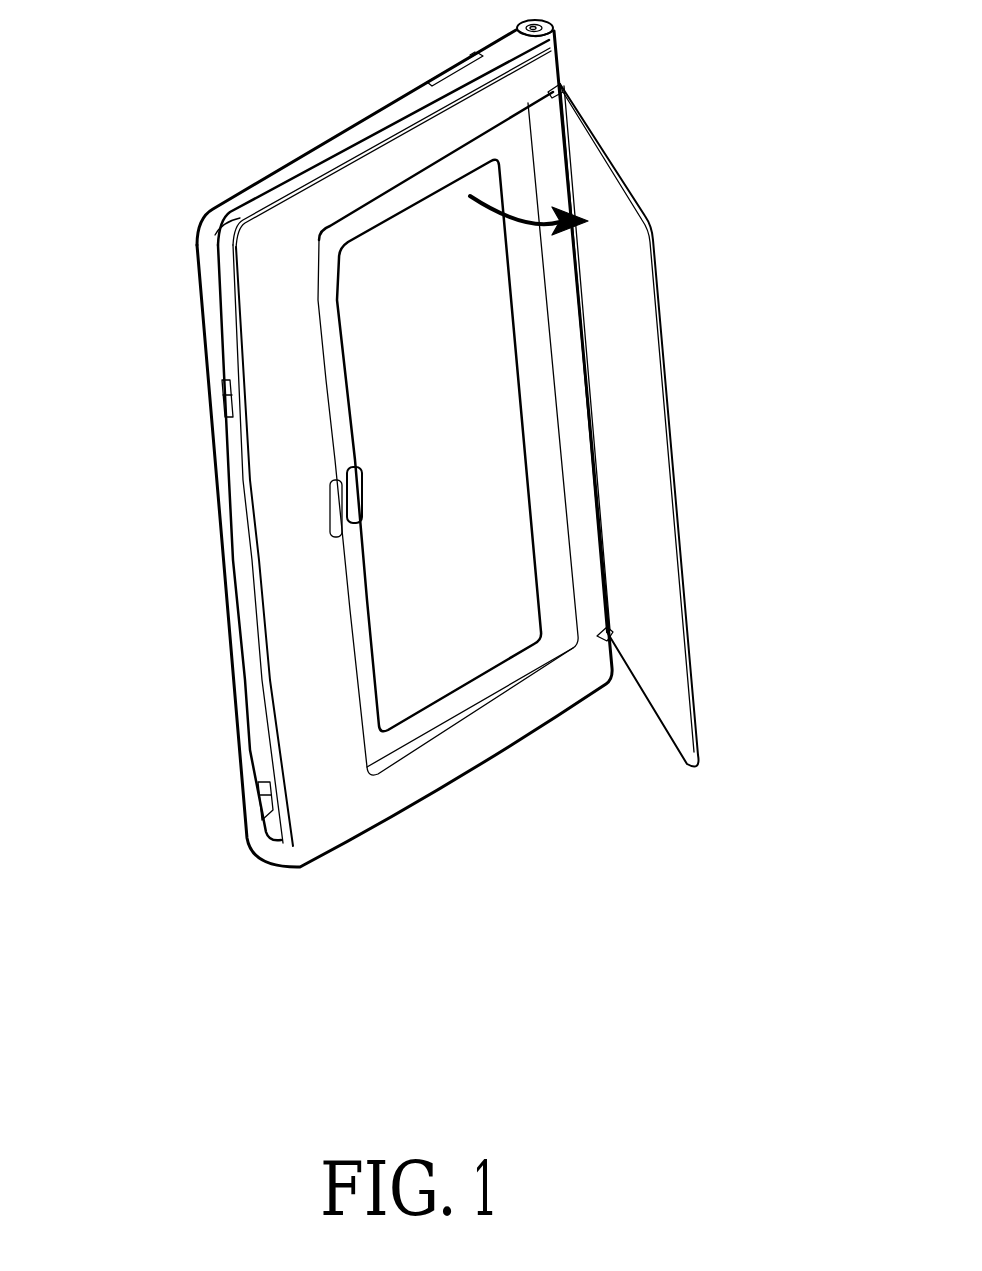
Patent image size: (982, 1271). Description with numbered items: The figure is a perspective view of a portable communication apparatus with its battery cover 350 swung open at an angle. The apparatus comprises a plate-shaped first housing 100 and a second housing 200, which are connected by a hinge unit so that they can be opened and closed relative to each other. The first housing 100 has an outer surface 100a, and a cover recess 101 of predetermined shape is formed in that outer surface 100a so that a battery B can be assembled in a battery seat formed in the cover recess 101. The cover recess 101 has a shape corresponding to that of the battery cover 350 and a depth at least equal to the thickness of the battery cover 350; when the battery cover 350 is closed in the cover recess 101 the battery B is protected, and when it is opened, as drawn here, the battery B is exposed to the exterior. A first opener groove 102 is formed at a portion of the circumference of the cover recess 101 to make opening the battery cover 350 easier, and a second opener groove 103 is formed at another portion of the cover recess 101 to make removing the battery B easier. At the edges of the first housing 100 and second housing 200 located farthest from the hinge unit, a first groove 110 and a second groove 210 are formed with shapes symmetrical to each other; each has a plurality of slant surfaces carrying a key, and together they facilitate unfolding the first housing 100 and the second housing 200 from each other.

The first housing 100 is at (381, 829).
The outer surface 100a is at (247, 247).
The cover recess 101 is at (400, 742).
The battery B is at (450, 667).
The first opener groove 102 is at (333, 513).
The second opener groove 103 is at (357, 465).
The first groove 110 is at (145, 555).
The second groove 210 is at (228, 696).
The second housing 200 is at (205, 865).
The battery cover 350 is at (715, 541).